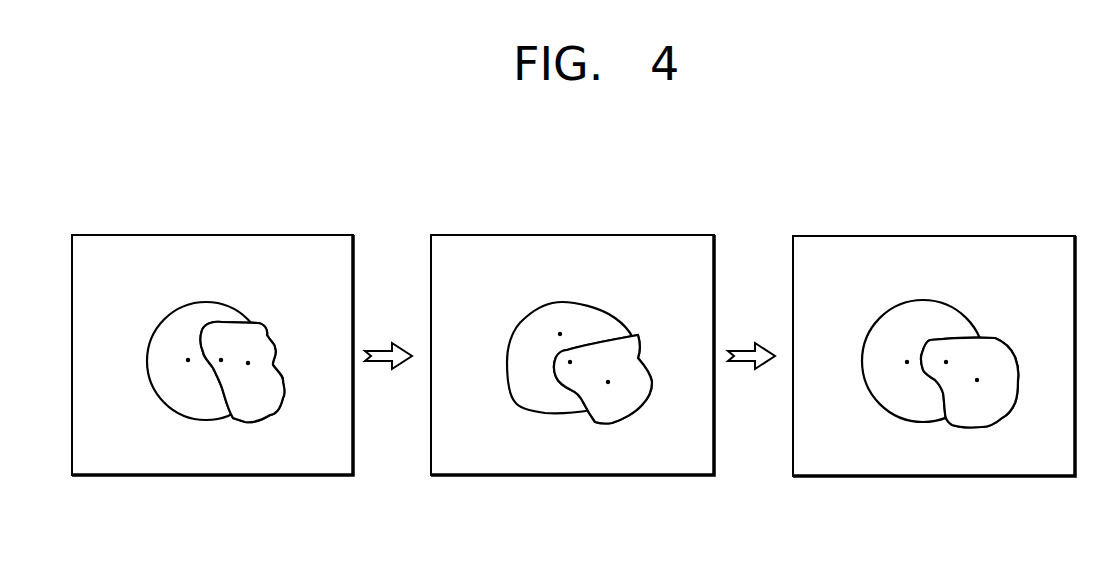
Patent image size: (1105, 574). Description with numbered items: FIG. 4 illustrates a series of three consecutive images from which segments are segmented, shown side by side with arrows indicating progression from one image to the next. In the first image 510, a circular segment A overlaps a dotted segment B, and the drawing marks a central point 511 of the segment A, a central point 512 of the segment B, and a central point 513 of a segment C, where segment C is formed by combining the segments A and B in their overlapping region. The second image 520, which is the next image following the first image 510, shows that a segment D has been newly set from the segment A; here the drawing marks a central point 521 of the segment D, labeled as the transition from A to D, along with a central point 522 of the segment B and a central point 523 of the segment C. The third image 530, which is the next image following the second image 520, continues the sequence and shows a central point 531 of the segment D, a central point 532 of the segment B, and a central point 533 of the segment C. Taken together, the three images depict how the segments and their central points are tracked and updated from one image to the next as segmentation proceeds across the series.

The image 1 510 is at (213, 235).
The central point of segment A 511 is at (188, 360).
The central point of segment B 512 is at (248, 363).
The central point of segment C 513 is at (221, 360).
The image 2 520 is at (623, 235).
The central point of segment D 521 is at (560, 334).
The central point of segment B 522 is at (608, 382).
The central point of segment C 523 is at (570, 362).
The image 3 530 is at (935, 236).
The central point of segment D 531 is at (907, 362).
The central point of segment B 532 is at (977, 380).
The central point of segment C 533 is at (946, 362).